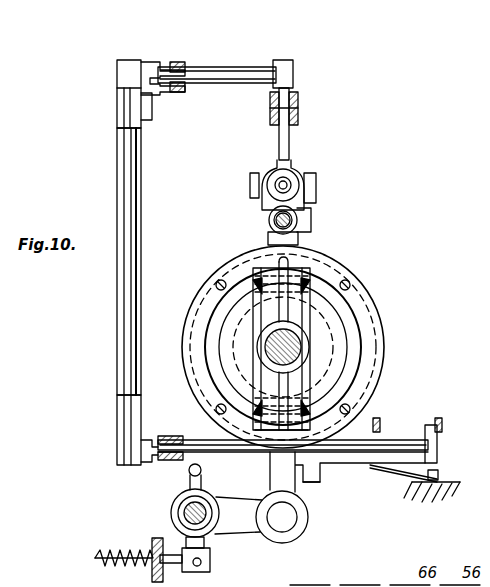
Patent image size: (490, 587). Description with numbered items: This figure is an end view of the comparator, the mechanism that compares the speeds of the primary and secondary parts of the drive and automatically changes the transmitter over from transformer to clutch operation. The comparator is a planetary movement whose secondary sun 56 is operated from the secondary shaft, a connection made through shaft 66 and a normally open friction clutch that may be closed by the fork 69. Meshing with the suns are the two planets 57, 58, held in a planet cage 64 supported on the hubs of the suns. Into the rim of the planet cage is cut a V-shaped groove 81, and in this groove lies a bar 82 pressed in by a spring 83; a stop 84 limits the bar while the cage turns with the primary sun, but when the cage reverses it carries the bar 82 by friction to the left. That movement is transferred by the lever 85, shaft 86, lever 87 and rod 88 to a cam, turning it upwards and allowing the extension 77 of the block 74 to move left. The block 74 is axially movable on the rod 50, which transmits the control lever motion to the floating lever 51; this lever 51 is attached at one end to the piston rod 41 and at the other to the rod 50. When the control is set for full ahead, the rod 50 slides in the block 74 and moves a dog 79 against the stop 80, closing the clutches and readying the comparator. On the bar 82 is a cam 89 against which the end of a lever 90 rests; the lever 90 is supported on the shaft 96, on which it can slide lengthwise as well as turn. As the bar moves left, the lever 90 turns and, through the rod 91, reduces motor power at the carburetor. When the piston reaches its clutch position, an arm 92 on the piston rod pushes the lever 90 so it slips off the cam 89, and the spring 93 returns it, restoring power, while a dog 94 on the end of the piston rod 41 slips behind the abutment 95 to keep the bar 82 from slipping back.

The piston rod 41 is at (297, 518).
The rod 50 is at (275, 187).
The lever 51 is at (262, 203).
The secondary sun 56 is at (330, 322).
The planet 57 is at (312, 290).
The planet 58 is at (300, 413).
The planet cage 64 is at (343, 272).
The shaft 66 is at (300, 347).
The fork 69 is at (268, 238).
The block 74 is at (300, 176).
The extension 77 is at (289, 145).
The dog 79 is at (312, 202).
The stop 80 is at (269, 222).
The V-shaped groove 81 is at (330, 441).
The bar 82 is at (362, 464).
The spring 83 is at (392, 472).
The stop 84 is at (440, 420).
The lever 85 is at (150, 440).
The shaft 86 is at (118, 313).
The lever 87 is at (150, 78).
The rod 88 is at (225, 65).
The cam 89 is at (202, 467).
The lever 90 is at (189, 481).
The rod 91 is at (172, 563).
The arm 92 is at (241, 518).
The spring 93 is at (128, 552).
The dog 94 is at (268, 500).
The abutment 95 is at (322, 485).
The shaft 96 is at (184, 513).